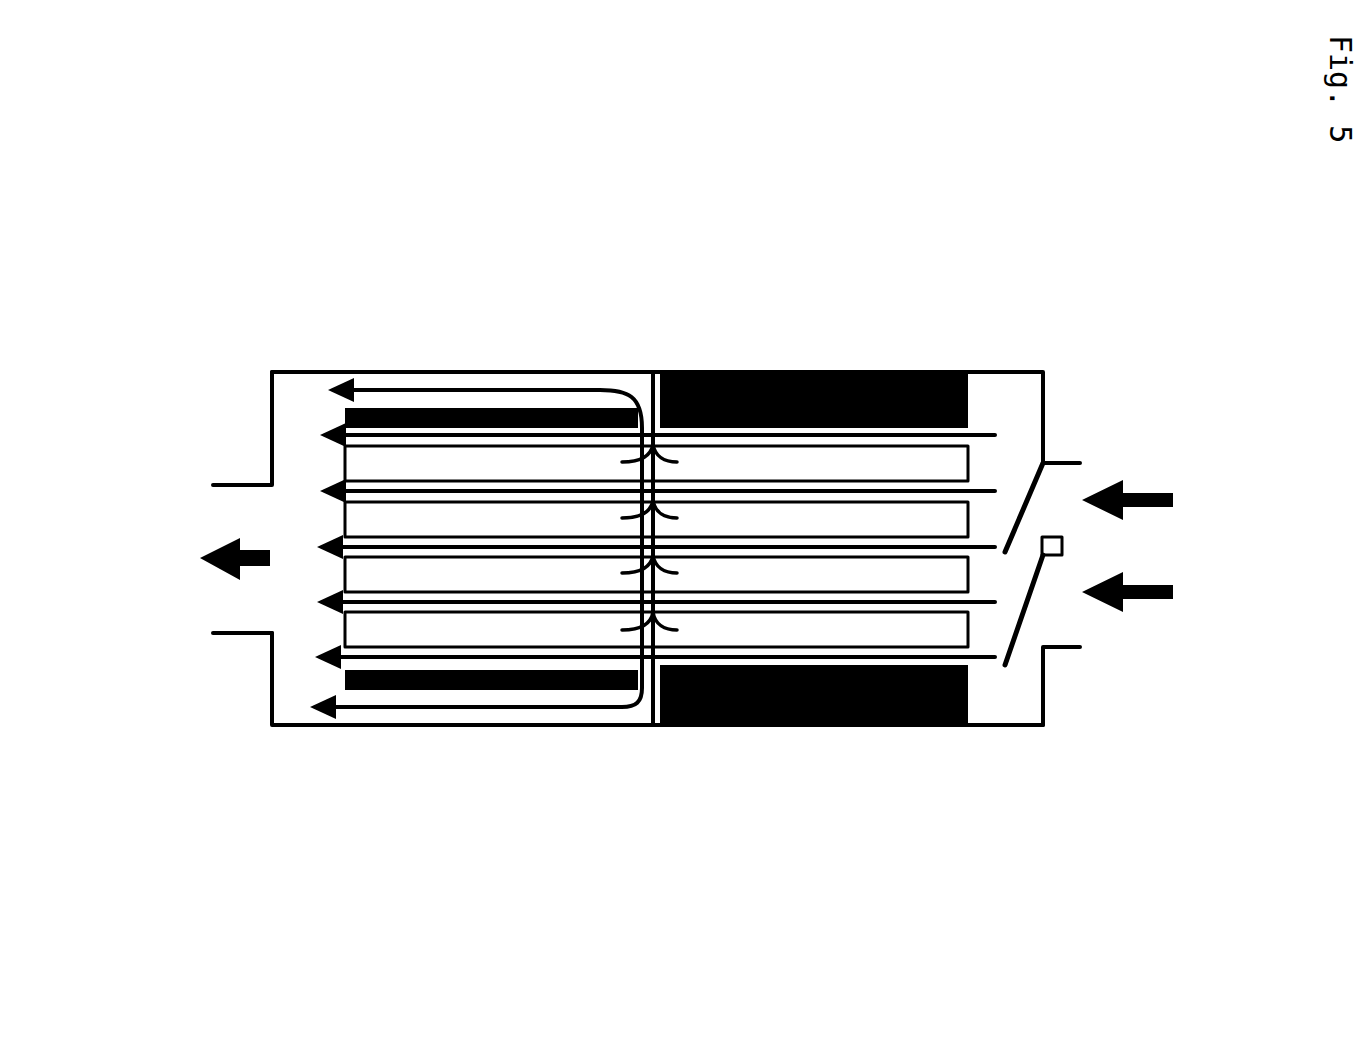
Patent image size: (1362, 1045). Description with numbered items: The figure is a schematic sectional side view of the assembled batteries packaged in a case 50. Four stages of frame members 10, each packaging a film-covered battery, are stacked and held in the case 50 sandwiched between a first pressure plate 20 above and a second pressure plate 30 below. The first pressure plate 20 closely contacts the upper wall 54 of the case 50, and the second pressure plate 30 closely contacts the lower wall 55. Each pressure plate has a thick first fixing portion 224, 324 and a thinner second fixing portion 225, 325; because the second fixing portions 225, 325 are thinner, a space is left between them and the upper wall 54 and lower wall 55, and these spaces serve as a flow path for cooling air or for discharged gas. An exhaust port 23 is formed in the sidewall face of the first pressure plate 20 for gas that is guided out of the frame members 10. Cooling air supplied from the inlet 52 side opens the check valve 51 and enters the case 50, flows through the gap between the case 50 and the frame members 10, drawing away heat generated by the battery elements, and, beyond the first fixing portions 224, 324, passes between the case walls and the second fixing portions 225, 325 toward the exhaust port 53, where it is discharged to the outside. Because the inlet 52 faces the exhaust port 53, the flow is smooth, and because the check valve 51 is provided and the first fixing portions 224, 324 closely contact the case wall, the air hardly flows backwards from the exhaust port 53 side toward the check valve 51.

The frame member 10 is at (943, 467).
The first pressure plate 20 is at (666, 290).
The exhaust port 23 is at (655, 372).
The second pressure plate 30 is at (656, 778).
The case 50 is at (614, 571).
The check valve 51 is at (1035, 490).
The inlet 52 is at (1062, 652).
The exhaust port 53 is at (237, 633).
The upper wall 54 is at (396, 372).
The lower wall 55 is at (348, 730).
The first fixing portion 224 is at (850, 370).
The second fixing portion 225 is at (483, 407).
The first fixing portion 324 is at (812, 727).
The second fixing portion 325 is at (477, 688).